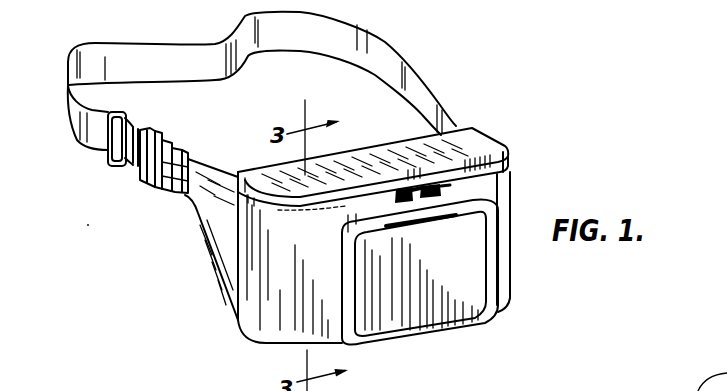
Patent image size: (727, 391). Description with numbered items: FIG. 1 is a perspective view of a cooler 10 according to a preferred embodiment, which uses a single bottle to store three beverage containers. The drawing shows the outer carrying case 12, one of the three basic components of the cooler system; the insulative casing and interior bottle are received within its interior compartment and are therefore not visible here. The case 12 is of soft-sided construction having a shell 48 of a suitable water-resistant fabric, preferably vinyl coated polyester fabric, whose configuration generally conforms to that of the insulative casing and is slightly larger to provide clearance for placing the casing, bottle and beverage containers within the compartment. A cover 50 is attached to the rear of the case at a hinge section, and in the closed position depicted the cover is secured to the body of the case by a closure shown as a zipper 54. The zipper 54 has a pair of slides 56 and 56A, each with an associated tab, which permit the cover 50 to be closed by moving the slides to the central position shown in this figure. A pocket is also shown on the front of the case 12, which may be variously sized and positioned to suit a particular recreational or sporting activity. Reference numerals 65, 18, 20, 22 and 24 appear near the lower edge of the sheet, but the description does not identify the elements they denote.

The cooler 10 is at (506, 117).
The outer carrying case 12 is at (253, 288).
The shell 48 is at (263, 312).
The zipper 54 is at (507, 192).
The slide 56 is at (393, 190).
The slide 56A is at (430, 200).
The component 65 is at (140, 390).
The cover 50 is at (177, 390).
The component 18 is at (466, 386).
The component 20 is at (540, 390).
The component 22 is at (610, 390).
The component 24 is at (672, 390).